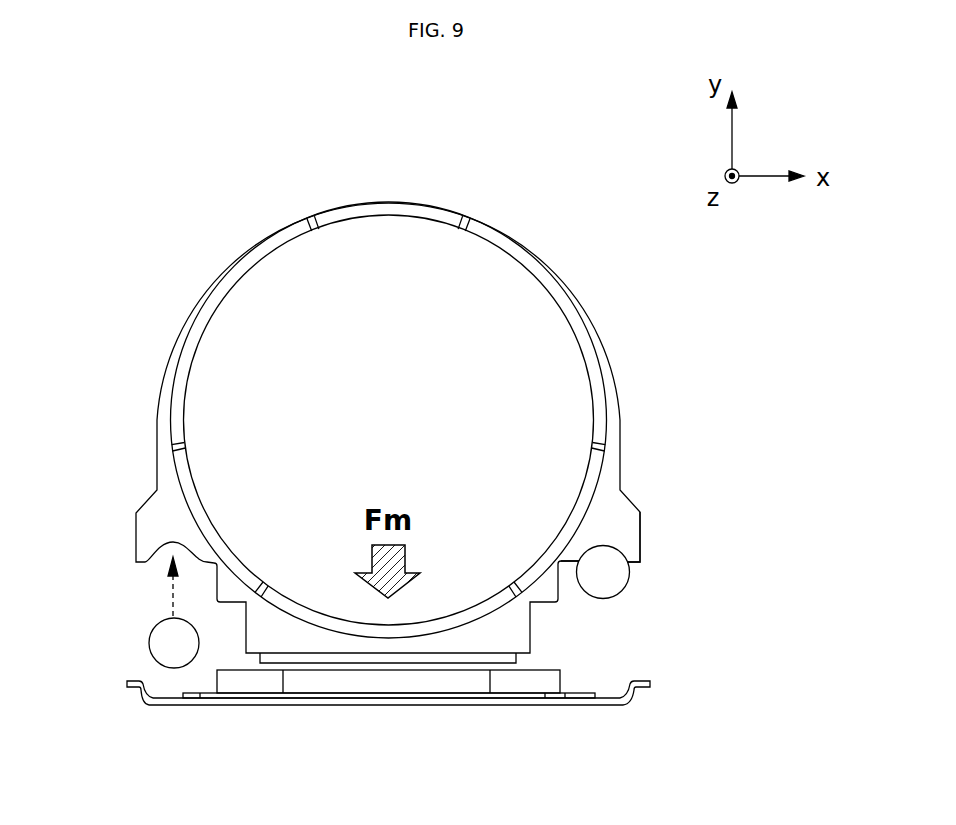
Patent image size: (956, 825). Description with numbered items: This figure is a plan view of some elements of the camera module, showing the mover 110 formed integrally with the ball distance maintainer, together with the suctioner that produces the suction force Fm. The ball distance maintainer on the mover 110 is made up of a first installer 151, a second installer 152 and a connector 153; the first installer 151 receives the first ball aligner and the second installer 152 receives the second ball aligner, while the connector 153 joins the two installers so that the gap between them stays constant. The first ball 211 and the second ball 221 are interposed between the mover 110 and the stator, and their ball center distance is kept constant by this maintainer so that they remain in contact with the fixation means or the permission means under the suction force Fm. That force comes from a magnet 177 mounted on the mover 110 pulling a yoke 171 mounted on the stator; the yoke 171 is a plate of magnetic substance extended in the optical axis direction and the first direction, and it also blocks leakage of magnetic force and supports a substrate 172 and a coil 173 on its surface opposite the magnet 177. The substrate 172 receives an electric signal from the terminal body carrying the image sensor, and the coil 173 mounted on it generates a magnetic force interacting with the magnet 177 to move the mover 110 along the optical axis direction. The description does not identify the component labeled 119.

The mover 110 is at (614, 357).
The lens 119 is at (386, 373).
The first installer 151 is at (168, 552).
The second installer 152 is at (600, 546).
The connector 153 is at (387, 645).
The yoke 171 is at (182, 700).
The substrate 172 is at (178, 697).
The coil 173 is at (216, 672).
The magnet 177 is at (516, 655).
The first ball 211 is at (152, 634).
The second ball 221 is at (628, 585).